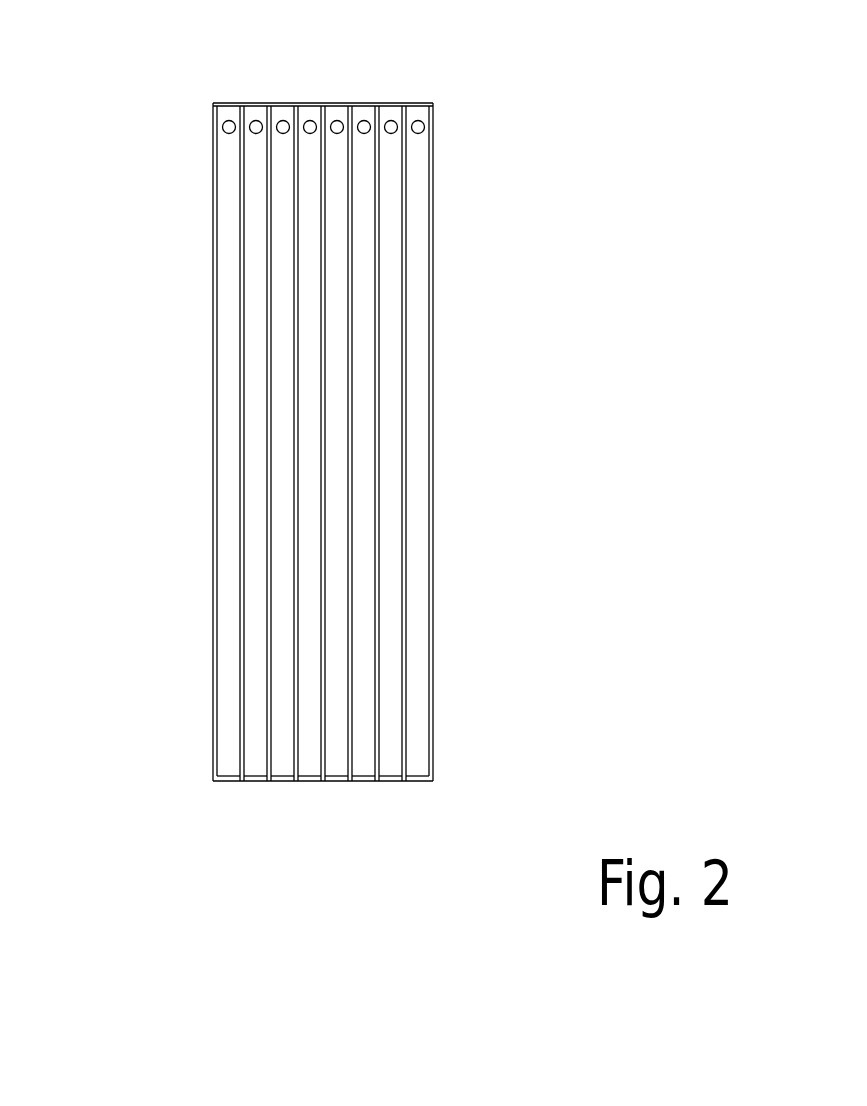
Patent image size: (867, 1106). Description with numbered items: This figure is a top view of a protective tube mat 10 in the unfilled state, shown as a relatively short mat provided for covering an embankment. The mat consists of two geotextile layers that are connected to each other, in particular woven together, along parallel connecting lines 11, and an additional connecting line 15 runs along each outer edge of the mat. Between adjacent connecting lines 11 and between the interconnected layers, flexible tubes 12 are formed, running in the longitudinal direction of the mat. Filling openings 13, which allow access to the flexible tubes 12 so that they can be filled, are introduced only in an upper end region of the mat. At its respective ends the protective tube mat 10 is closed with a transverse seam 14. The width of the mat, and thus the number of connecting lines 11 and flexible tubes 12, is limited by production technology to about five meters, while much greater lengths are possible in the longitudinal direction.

The protective tube mat 10 is at (316, 452).
The connecting lines 11 is at (240, 347).
The flexible tubes 12 is at (222, 392).
The filling openings 13 is at (393, 106).
The transverse seam 14 is at (322, 103).
The connecting line 15 is at (212, 308).